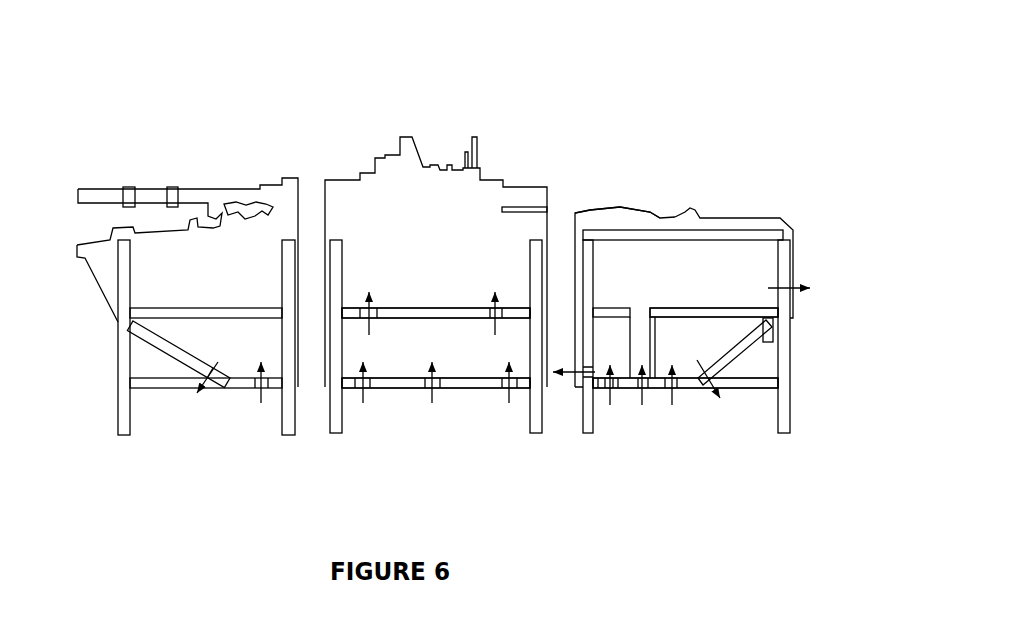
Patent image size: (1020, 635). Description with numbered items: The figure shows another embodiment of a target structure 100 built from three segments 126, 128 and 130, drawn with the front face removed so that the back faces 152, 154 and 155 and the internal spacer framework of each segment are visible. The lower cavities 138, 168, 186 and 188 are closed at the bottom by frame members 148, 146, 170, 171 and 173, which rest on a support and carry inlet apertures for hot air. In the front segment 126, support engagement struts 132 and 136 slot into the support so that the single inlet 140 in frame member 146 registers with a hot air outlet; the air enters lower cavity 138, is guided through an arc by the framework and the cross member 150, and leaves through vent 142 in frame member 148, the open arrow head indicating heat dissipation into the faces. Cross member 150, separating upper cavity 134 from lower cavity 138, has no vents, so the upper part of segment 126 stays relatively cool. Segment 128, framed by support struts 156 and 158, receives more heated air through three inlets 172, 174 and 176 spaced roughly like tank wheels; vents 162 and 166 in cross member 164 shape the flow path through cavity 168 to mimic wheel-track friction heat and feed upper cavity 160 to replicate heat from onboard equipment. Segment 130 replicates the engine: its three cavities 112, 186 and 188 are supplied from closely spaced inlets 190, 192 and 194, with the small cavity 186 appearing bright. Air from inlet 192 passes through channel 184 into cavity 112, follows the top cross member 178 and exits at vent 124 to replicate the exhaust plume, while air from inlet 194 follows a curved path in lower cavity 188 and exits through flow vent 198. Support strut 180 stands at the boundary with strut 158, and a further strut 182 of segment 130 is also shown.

The target structure 100 is at (673, 132).
The cavity 112 is at (674, 272).
The vent 124 is at (803, 282).
The segment 126 is at (188, 197).
The segment 128 is at (368, 187).
The segment 130 is at (627, 222).
The support engagement strut 132 is at (120, 270).
The upper cavity 134 is at (230, 300).
The support engagement strut 136 is at (282, 270).
The lower cavity 138 is at (220, 351).
The inlet 140 is at (257, 388).
The vent 142 is at (215, 388).
The frame member 146 is at (295, 388).
The frame member 148 is at (162, 345).
The cross member 150 is at (148, 306).
The back face 152 is at (223, 200).
The back face 154 is at (437, 187).
The back face 155 is at (685, 223).
The support strut 156 is at (338, 250).
The support strut 158 is at (528, 237).
The upper cavity 160 is at (409, 240).
The vent 162 is at (378, 312).
The cross member 164 is at (417, 313).
The vent 166 is at (510, 308).
The cavity 168 is at (418, 351).
The frame member 170 is at (388, 390).
The frame member 171 is at (603, 388).
The inlet 172 is at (360, 390).
The frame member 173 is at (712, 375).
The inlet 174 is at (435, 390).
The inlet 176 is at (517, 390).
The top cross member 178 is at (755, 233).
The support strut 180 is at (595, 257).
The post 182 is at (782, 345).
The channel 184 is at (643, 313).
The cavity 186 is at (597, 347).
The lower cavity 188 is at (688, 348).
The inlet 190 is at (615, 388).
The inlet 192 is at (643, 388).
The inlet 194 is at (680, 388).
The flow vent 198 is at (585, 372).